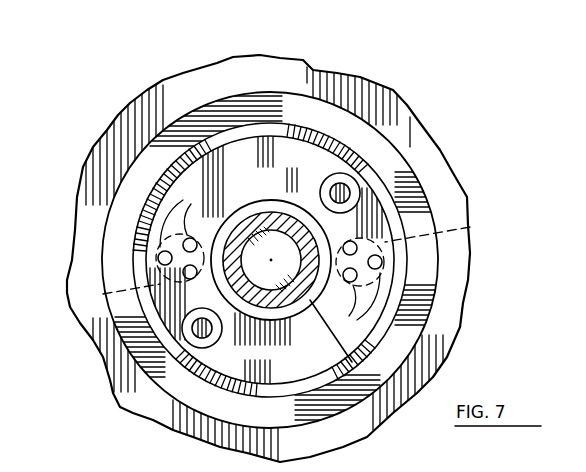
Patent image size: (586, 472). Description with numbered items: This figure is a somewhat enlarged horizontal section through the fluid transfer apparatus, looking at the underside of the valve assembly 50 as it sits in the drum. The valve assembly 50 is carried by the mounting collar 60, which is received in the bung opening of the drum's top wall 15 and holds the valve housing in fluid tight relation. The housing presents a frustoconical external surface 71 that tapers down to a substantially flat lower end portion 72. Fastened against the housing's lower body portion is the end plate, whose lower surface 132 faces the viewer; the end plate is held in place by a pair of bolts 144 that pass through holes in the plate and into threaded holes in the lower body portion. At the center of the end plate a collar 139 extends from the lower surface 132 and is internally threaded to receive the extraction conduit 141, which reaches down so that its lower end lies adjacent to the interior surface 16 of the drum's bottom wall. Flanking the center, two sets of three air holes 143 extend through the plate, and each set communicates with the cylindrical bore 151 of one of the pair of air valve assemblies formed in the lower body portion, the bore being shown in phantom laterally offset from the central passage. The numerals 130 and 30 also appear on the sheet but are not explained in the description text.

The top wall 15 is at (433, 140).
The interior surface 16 is at (390, 117).
The valve assembly 50 is at (410, 188).
The mounting collar 60 is at (160, 318).
The frustoconical external surface 71 is at (160, 340).
The lower end portion 72 is at (173, 377).
The hub 130 is at (277, 345).
The lower surface 132 is at (250, 179).
The collar 139 is at (353, 359).
The extraction conduit 141 is at (271, 290).
The air holes 143 is at (270, 254).
The bolts 144 is at (326, 180).
The cylindrical bore 151 is at (482, 228).
The adjacent figure numeral 30 is at (578, 468).